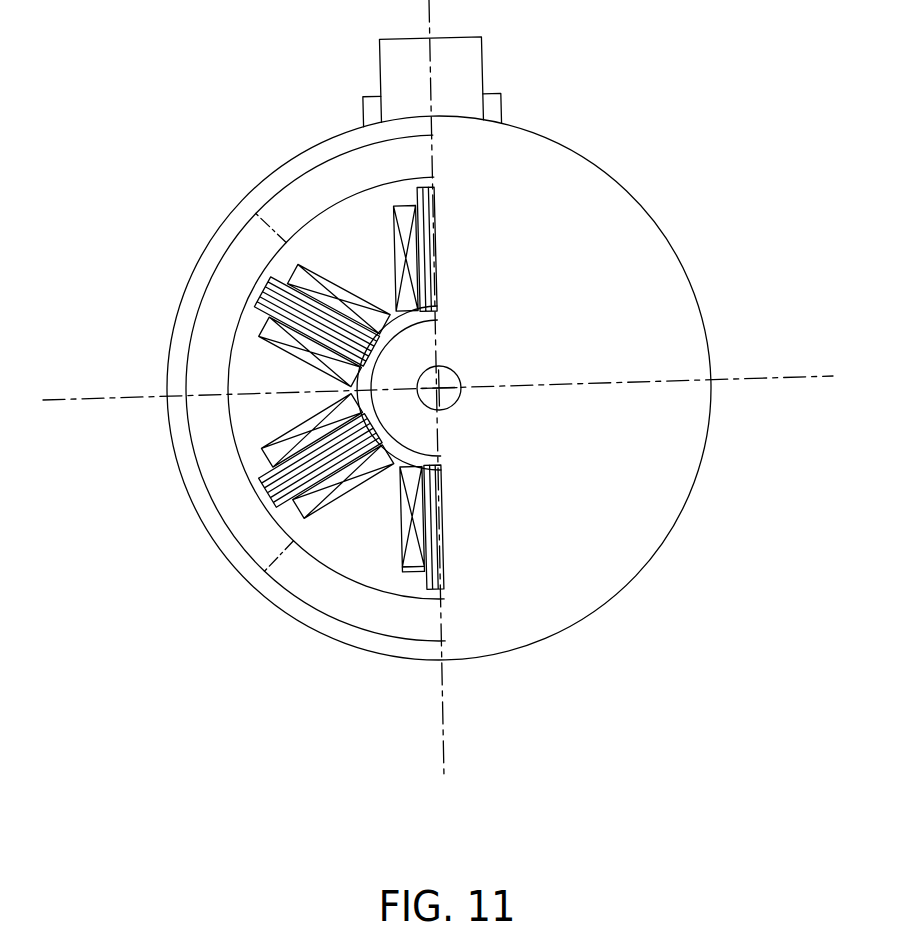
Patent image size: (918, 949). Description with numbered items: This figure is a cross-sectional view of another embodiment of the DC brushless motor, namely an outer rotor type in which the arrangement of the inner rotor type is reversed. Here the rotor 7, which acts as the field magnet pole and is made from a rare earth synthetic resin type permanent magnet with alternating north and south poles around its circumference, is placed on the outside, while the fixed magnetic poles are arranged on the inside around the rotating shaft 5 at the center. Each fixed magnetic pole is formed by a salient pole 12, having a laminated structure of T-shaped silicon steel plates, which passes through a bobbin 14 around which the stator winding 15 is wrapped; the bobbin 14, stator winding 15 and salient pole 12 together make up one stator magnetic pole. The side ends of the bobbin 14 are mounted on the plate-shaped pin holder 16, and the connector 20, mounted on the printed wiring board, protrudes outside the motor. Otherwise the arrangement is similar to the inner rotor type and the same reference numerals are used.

The rotating shaft 5 is at (447, 380).
The rotor 7 is at (247, 540).
The salient pole 12 is at (433, 548).
The bobbin 14 is at (412, 568).
The stator winding 15 is at (401, 523).
The pin holder 16 is at (490, 108).
The connector 20 is at (467, 80).